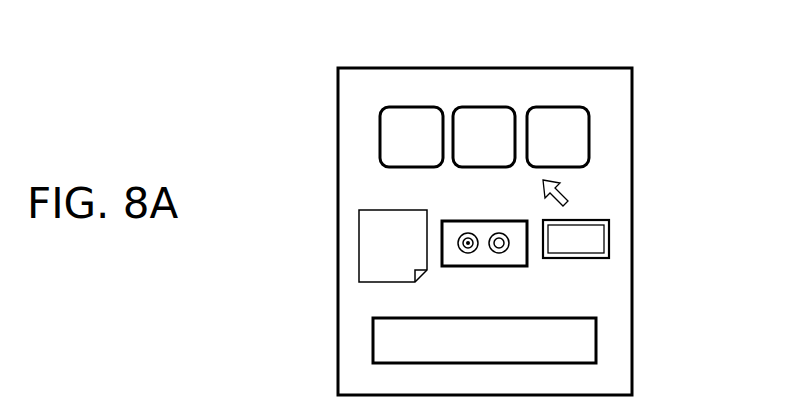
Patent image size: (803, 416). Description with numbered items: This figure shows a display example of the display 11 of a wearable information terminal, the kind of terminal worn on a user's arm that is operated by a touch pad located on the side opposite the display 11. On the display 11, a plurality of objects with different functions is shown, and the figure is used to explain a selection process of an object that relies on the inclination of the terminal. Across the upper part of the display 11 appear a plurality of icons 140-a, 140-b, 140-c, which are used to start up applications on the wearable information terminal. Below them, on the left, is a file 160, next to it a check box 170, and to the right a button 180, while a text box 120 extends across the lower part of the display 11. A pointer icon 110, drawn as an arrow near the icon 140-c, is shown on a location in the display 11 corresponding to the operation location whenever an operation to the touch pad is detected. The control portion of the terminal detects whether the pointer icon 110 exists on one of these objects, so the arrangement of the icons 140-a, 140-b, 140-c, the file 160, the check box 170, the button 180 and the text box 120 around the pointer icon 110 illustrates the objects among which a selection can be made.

The display 11 is at (635, 81).
The pointer icon 110 is at (568, 201).
The text box 120 is at (373, 340).
The icon 140-a is at (408, 107).
The icon 140-b is at (483, 107).
The icon 140-c is at (556, 107).
The file 160 is at (359, 247).
The check box 170 is at (527, 263).
The button 180 is at (609, 240).